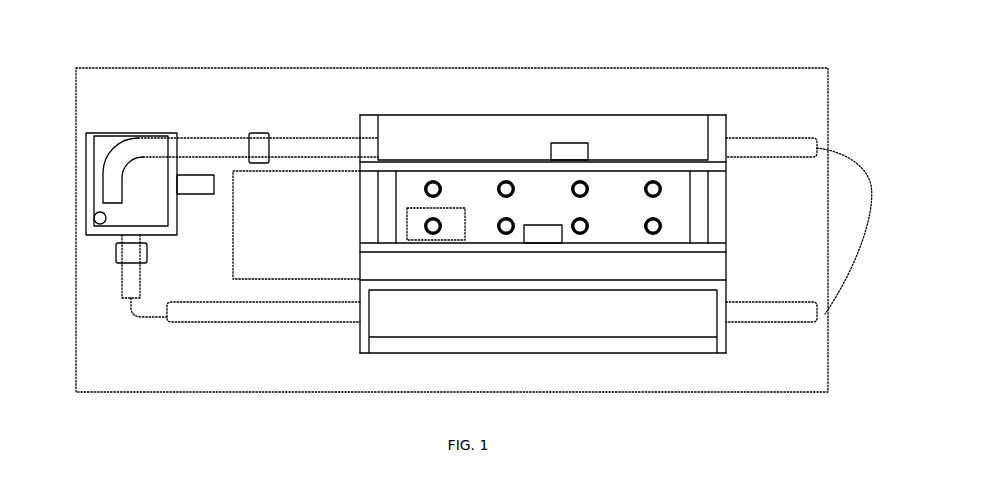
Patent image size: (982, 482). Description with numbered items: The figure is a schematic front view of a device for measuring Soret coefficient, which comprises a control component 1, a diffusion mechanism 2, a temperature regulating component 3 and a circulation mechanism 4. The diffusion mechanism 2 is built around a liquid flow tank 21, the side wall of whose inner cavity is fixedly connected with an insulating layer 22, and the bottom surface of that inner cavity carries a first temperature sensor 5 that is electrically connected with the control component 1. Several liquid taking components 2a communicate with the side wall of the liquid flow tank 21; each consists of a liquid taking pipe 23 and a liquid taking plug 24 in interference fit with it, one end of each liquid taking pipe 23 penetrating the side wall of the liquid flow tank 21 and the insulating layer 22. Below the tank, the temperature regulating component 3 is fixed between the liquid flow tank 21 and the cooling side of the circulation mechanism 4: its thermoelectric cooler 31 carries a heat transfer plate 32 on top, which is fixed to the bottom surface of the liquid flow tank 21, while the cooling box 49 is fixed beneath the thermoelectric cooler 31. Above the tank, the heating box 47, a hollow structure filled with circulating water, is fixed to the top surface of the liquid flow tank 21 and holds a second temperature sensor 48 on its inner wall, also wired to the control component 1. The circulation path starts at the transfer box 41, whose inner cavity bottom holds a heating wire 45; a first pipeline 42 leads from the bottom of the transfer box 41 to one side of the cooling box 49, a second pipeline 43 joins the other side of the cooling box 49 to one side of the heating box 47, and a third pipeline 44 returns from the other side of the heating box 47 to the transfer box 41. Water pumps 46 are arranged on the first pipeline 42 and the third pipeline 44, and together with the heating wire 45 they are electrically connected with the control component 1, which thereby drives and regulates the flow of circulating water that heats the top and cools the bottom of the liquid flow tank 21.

The control component 1 is at (198, 188).
The diffusion mechanism 2 is at (634, 213).
The liquid taking components 2a is at (407, 217).
The liquid flow tank 21 is at (717, 236).
The insulating layer 22 is at (700, 210).
The liquid taking pipes 23 is at (662, 186).
The liquid taking plugs 24 is at (660, 222).
The temperature regulating component 3 is at (633, 258).
The thermoelectric cooler 31 is at (705, 273).
The heat transfer plate 32 is at (717, 250).
The circulation mechanism 4 is at (283, 68).
The transfer box 41 is at (88, 152).
The first pipeline 42 is at (133, 283).
The second pipeline 43 is at (795, 310).
The third pipeline 44 is at (203, 150).
The heating wire 45 is at (107, 211).
The water pumps 46 is at (124, 248).
The heating box 47 is at (718, 122).
The second temperature sensor 48 is at (570, 152).
The cooling box 49 is at (716, 345).
The first temperature sensor 5 is at (542, 232).